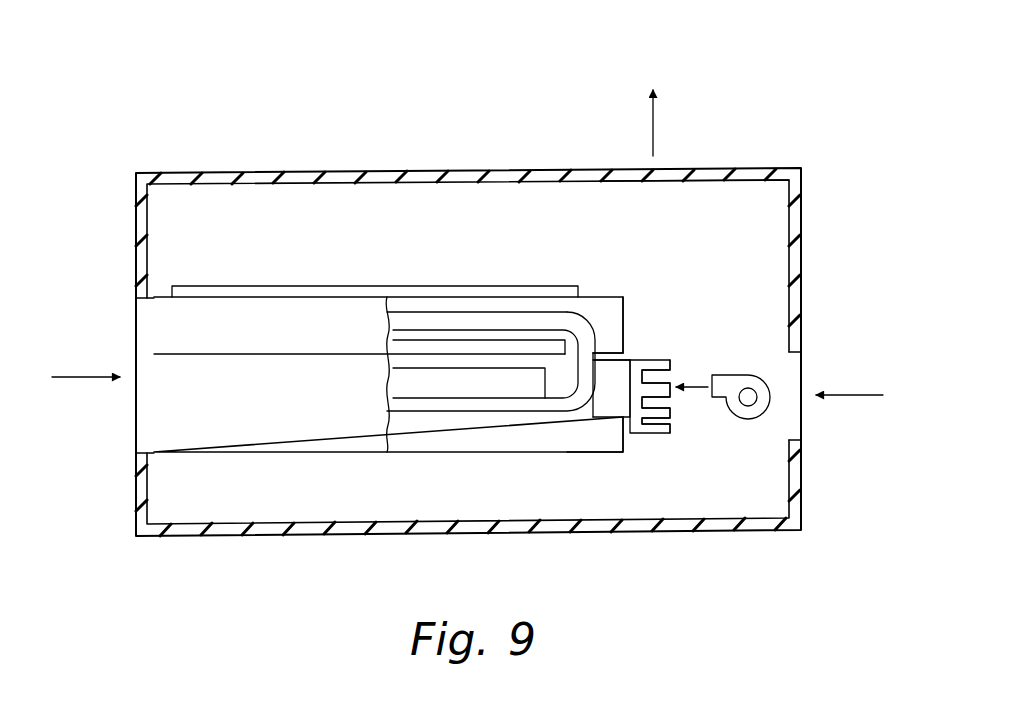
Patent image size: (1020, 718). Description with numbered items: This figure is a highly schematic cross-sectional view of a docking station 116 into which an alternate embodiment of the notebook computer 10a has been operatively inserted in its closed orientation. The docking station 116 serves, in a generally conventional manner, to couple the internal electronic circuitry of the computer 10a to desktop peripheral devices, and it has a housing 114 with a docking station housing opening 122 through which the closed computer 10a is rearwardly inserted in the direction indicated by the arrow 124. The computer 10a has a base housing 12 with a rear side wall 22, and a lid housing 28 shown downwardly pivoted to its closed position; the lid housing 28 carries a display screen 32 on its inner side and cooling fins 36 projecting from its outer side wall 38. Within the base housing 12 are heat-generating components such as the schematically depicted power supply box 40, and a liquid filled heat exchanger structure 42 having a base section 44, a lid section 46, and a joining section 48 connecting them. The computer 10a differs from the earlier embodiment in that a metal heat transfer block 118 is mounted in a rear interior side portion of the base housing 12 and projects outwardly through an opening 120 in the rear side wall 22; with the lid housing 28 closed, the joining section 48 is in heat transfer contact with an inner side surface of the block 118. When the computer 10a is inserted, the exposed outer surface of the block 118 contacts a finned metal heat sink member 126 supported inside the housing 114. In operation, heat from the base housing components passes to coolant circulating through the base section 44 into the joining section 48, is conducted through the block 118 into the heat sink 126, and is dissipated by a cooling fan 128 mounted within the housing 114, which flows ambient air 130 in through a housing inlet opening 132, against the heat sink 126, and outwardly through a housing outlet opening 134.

The notebook computer 10a is at (224, 457).
The base housing 12 is at (302, 456).
The rear side wall 22 is at (628, 420).
The lid housing 28 is at (628, 300).
The display screen 32 is at (467, 345).
The cooling fins 36 is at (236, 285).
The outer side wall 38 is at (617, 297).
The power supply box 40 is at (443, 380).
The heat exchanger structure 42 is at (548, 416).
The base section 44 is at (470, 405).
The lid section 46 is at (526, 318).
The joining section 48 is at (592, 338).
The docking station housing 114 is at (320, 169).
The docking station 116 is at (757, 121).
The heat transfer block 118 is at (603, 400).
The opening 120 is at (660, 412).
The docking station housing opening 122 is at (140, 442).
The arrow 124 is at (78, 376).
The finned heat sink member 126 is at (658, 359).
The cooling fan 128 is at (780, 490).
The ambient air 130 is at (652, 127).
The housing inlet opening 132 is at (802, 436).
The housing outlet opening 134 is at (675, 182).